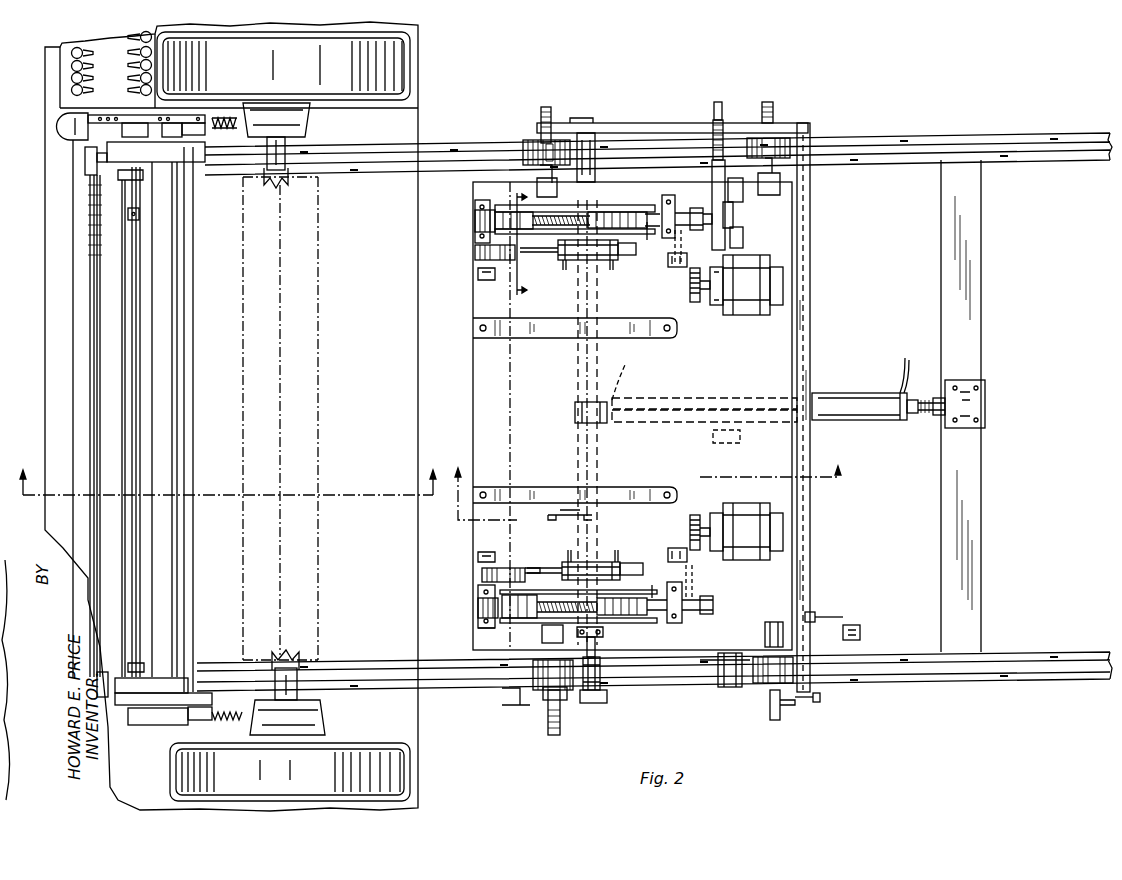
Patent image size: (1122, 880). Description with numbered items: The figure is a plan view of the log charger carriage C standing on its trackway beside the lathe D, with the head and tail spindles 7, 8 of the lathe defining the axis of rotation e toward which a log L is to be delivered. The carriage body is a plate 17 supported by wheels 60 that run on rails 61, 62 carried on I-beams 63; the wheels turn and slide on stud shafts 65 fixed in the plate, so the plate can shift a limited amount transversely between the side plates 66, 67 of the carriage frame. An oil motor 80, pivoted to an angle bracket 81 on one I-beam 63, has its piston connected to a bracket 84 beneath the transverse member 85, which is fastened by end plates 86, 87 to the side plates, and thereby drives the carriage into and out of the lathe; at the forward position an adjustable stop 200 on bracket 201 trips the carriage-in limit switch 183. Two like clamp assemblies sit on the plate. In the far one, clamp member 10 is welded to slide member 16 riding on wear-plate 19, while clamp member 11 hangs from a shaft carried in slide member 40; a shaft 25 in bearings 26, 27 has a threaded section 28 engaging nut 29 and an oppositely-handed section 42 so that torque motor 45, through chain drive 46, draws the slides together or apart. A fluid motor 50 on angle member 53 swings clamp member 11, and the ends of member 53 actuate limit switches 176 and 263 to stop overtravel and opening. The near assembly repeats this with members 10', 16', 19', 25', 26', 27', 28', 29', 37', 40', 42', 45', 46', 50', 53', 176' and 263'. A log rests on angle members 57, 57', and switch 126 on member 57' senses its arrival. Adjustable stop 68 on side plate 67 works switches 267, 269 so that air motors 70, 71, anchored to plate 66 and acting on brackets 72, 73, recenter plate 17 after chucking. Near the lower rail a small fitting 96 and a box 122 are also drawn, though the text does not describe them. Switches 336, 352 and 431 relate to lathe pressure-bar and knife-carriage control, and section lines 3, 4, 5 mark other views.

The head spindle 7 is at (290, 140).
The tail spindle 8 is at (300, 694).
The log centering and clamping member 10 is at (589, 203).
The log centering and clamping member 10' is at (592, 617).
The clamp member 11 is at (474, 252).
The slide member 16 is at (647, 245).
The slide member 16' is at (657, 581).
The plate 17 is at (480, 527).
The wear-plate 19 is at (575, 208).
The wear-plate 19' is at (578, 584).
The shaft 25 is at (693, 208).
The shaft 25' is at (468, 601).
The bearing member 26 is at (673, 206).
The bearing member 26' is at (690, 610).
The bearing member 27 is at (459, 220).
The bearing member 27' is at (465, 606).
The threaded section 28 is at (670, 247).
The threaded section 28' is at (692, 588).
The nut 29 is at (642, 205).
The nut 29' is at (662, 622).
The shaft 37' is at (522, 557).
The slide member 40 is at (518, 247).
The slide member 40' is at (526, 619).
The threaded section 42 is at (462, 222).
The threaded section 42' is at (466, 640).
The electric motor 45 is at (746, 295).
The electric motor 45' is at (746, 519).
The sprocket chain drive 46 is at (688, 285).
The sprocket chain drive 46' is at (713, 548).
The fluid pressure actuated motor 50 is at (578, 266).
The fluid pressure actuated motor 50' is at (585, 553).
The angle member 53 is at (581, 277).
The angle member 53' is at (585, 547).
The angle member 57 is at (575, 340).
The angle member 57' is at (575, 481).
The wheels 60 is at (525, 150).
The rail 61 is at (908, 662).
The rail 62 is at (930, 118).
The I-beam 63 is at (970, 223).
The stud shaft 65 is at (551, 112).
The side plate 66 is at (705, 690).
The side plate 67 is at (726, 128).
The adjustable stop 68 is at (734, 212).
The fluid actuated motor 70 is at (605, 690).
The fluid actuated motor 71 is at (714, 688).
The bracket 72 is at (596, 633).
The bracket 73 is at (774, 622).
The fluid actuated motor 80 is at (853, 396).
The angle bracket 81 is at (966, 380).
The bracket 84 is at (578, 418).
The transversely extending member 85 is at (586, 422).
The end plate 86 is at (602, 703).
The end plate 87 is at (590, 122).
The switch 96 is at (830, 620).
The switch box 122 is at (870, 627).
The limit switch 126 is at (594, 516).
The limit switch 176 is at (662, 273).
The limit switch 176' is at (666, 548).
The limit switch 183 is at (502, 700).
The adjustable stop 200 is at (820, 698).
The bracket 201 is at (800, 705).
The limit switch 263 is at (459, 278).
The limit switch 263' is at (465, 551).
The limit switch 267 is at (744, 236).
The limit switch 269 is at (744, 188).
The pressure bar open valve 336 is at (140, 216).
The knife into depth limit switch 352 is at (220, 130).
The knife carrier back limit switch 431 is at (180, 128).
The lathe D is at (44, 243).
The log charger carriage C is at (470, 349).
The log L is at (322, 377).
The axis of rotation e is at (283, 453).
The section line 3- 3 is at (652, 481).
The section line 4- 4 is at (528, 244).
The section line 5- 5 is at (227, 471).